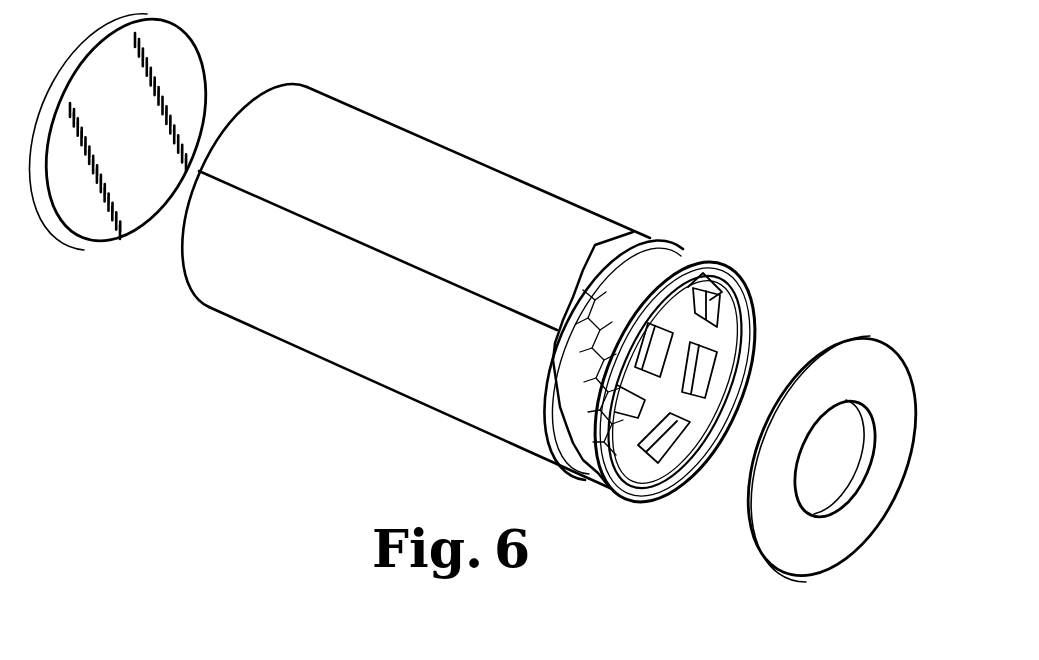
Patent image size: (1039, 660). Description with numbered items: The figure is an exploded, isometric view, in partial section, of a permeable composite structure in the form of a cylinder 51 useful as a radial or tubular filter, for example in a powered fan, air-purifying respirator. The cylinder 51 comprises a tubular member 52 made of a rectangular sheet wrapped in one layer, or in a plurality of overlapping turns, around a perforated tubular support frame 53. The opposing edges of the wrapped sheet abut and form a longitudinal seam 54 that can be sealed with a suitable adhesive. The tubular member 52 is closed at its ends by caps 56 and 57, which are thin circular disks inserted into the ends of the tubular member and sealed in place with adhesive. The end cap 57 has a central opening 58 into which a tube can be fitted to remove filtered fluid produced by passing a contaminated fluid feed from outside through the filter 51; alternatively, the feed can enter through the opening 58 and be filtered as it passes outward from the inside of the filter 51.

The cylinder 51 is at (497, 304).
The tubular member 52 is at (233, 293).
The perforated tubular support frame 53 is at (760, 316).
The longitudinal seam 54 is at (459, 281).
The cap 56 is at (93, 232).
The end cap 57 is at (816, 457).
The central opening 58 is at (858, 478).